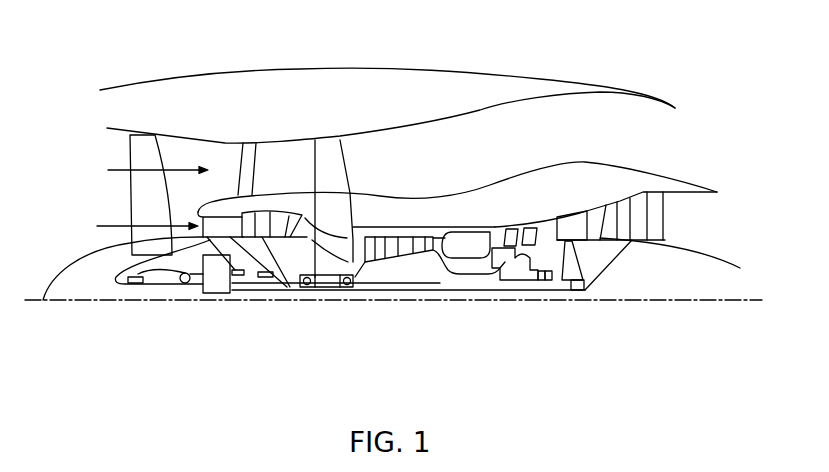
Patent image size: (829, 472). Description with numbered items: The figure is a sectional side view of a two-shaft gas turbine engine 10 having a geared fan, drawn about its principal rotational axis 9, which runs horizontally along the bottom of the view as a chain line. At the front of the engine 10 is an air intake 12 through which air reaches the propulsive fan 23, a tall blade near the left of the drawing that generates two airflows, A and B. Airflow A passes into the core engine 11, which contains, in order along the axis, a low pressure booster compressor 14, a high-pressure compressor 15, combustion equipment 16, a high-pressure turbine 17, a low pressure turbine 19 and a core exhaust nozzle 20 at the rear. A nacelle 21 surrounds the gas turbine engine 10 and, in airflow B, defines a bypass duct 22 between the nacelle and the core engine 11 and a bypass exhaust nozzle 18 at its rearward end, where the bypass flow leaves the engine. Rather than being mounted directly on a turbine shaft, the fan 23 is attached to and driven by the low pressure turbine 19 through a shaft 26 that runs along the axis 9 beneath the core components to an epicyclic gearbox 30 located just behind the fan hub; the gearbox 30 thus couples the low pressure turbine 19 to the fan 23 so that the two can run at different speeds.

The principal rotational axis 9 is at (638, 305).
The gas turbine engine 10 is at (117, 85).
The core engine 11 is at (453, 217).
The air intake 12 is at (104, 147).
The low pressure booster compressor 14 is at (278, 215).
The high-pressure compressor 15 is at (402, 237).
The combustion equipment 16 is at (473, 249).
The high-pressure turbine 17 is at (525, 225).
The bypass exhaust nozzle 18 is at (645, 120).
The low pressure turbine 19 is at (639, 200).
The core exhaust nozzle 20 is at (697, 227).
The nacelle 21 is at (342, 83).
The bypass duct 22 is at (563, 140).
The propulsive fan 23 is at (138, 207).
The shaft 26 is at (395, 289).
The epicyclic gearbox 30 is at (218, 277).
The core airflow A is at (140, 223).
The bypass airflow B is at (150, 168).